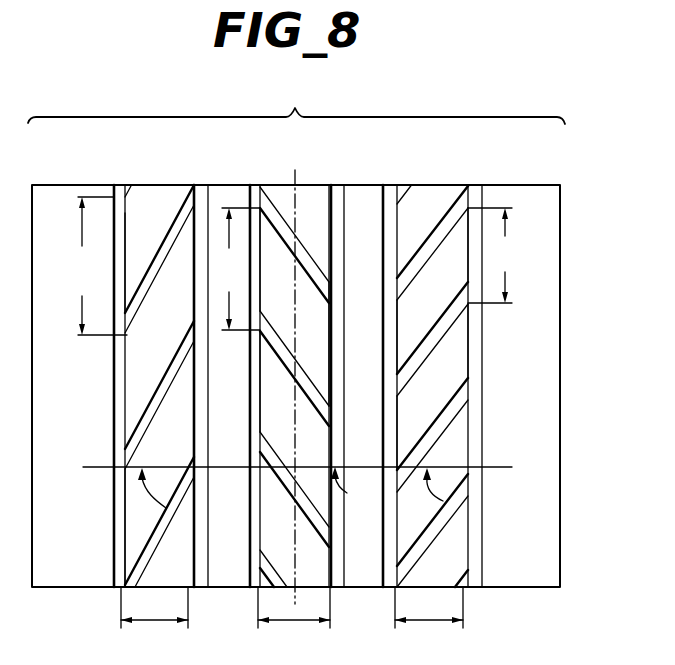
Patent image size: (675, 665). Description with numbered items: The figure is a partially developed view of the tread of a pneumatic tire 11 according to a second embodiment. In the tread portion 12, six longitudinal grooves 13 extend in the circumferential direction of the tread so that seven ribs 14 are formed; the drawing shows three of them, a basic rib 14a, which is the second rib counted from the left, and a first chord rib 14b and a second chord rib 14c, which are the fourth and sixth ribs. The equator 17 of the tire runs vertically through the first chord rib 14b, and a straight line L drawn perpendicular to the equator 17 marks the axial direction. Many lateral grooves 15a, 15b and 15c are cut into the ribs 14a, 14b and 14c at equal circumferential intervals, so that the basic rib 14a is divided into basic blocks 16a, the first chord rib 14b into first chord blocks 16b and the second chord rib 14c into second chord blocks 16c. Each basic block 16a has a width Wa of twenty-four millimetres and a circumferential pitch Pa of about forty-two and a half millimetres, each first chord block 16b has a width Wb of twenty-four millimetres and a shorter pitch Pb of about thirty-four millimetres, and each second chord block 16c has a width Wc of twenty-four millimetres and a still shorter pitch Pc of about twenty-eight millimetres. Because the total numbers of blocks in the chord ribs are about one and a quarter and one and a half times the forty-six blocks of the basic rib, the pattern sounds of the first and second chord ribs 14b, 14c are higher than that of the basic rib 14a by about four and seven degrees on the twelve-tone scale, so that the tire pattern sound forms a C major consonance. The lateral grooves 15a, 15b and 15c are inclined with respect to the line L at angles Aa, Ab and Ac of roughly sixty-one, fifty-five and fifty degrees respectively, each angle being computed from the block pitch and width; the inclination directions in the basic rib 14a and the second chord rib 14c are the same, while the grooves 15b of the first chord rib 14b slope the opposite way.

The tire 11 is at (572, 184).
The tread portion 12 is at (523, 562).
The longitudinal grooves 13 is at (116, 584).
The ribs 14 is at (312, 101).
The basic rib 14a is at (162, 206).
The first chord rib 14b is at (277, 202).
The second chord rib 14c is at (433, 205).
The lateral grooves 15a is at (158, 272).
The lateral grooves 15b is at (312, 387).
The lateral grooves 15c is at (443, 314).
The basic blocks 16a is at (138, 343).
The first chord blocks 16b is at (273, 407).
The second chord blocks 16c is at (455, 357).
The equator 17 is at (296, 185).
The circumferential pitch Pa is at (97, 266).
The circumferential pitch Pb is at (236, 269).
The circumferential pitch Pc is at (492, 255).
The width Wa is at (154, 621).
The width Wb is at (294, 620).
The width Wc is at (429, 621).
The inclination angle Aa is at (145, 492).
The inclination angle Ab is at (354, 494).
The inclination angle Ac is at (424, 492).
The straight line L is at (497, 470).